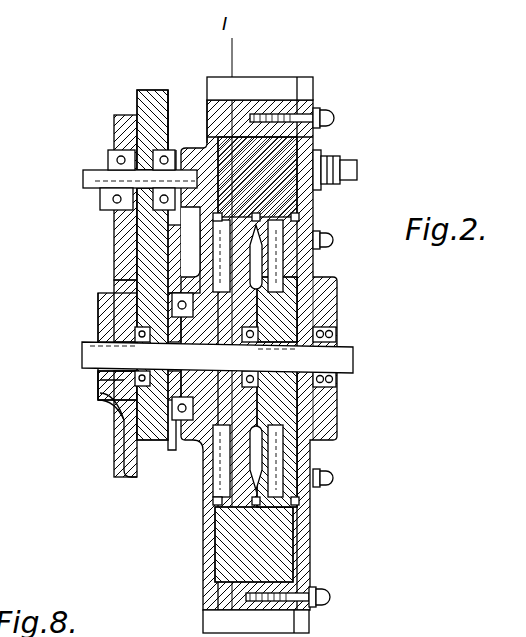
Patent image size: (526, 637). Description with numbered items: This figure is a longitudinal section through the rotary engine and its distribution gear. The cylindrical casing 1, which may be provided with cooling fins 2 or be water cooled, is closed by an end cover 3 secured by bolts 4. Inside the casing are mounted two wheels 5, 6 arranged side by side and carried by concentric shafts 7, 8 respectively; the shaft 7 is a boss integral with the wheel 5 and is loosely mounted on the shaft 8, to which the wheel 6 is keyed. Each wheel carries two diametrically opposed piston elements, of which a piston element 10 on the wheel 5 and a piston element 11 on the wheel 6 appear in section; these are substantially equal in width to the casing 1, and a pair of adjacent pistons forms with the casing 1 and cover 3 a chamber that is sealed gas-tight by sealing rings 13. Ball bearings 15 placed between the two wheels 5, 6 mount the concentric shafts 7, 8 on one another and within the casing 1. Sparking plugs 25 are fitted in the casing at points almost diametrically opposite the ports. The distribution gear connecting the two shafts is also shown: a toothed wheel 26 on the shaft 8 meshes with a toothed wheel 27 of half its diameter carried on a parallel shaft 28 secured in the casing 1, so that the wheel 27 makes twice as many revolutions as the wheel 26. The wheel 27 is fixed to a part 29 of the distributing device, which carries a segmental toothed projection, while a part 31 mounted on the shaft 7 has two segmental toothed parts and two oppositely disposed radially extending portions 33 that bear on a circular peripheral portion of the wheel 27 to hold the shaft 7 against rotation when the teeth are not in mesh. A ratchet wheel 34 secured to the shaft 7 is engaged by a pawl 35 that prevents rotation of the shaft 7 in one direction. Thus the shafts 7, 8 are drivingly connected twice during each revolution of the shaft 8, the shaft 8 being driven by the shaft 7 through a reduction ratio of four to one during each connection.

The cylindrical casing 1 is at (212, 552).
The cooling fins 2 is at (290, 92).
The end cover 3 is at (300, 541).
The bolts 4 is at (333, 118).
The wheel 5 is at (222, 448).
The wheel 6 is at (288, 454).
The shaft 7 is at (100, 393).
The shaft 8 is at (340, 358).
The piston element 10 is at (252, 531).
The piston element 11 is at (272, 156).
The sealing rings 13 is at (299, 217).
The ball bearings 15 is at (140, 333).
The sparking plugs 25 is at (357, 167).
The toothed wheel 26 is at (125, 268).
The toothed wheel 27 is at (122, 230).
The parallel shaft 28 is at (95, 178).
The part of distributing device 29 is at (150, 108).
The part of distributing device 31 is at (167, 388).
The radially extending portions 33 is at (112, 280).
The ratchet wheel 34 is at (160, 290).
The pawl 35 is at (177, 165).